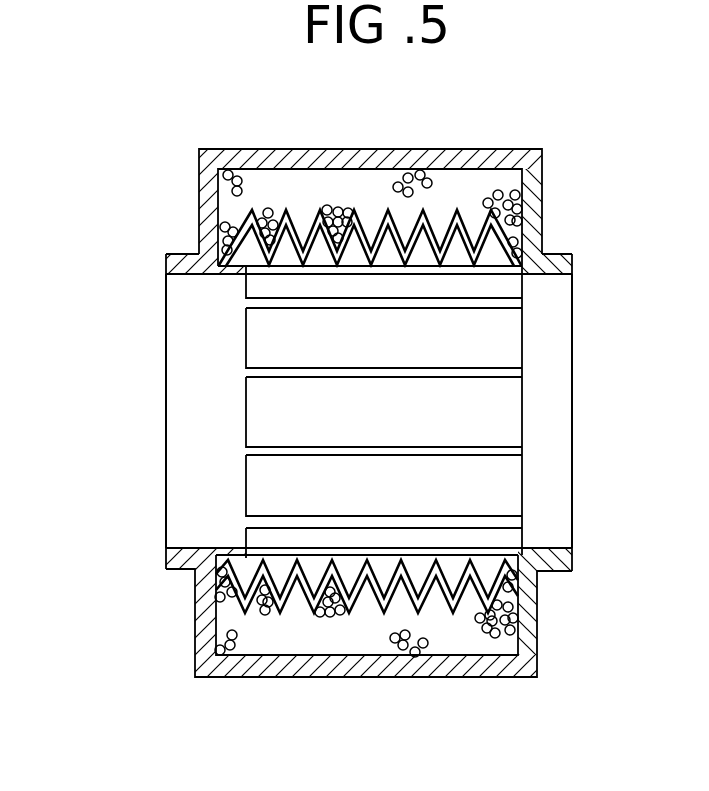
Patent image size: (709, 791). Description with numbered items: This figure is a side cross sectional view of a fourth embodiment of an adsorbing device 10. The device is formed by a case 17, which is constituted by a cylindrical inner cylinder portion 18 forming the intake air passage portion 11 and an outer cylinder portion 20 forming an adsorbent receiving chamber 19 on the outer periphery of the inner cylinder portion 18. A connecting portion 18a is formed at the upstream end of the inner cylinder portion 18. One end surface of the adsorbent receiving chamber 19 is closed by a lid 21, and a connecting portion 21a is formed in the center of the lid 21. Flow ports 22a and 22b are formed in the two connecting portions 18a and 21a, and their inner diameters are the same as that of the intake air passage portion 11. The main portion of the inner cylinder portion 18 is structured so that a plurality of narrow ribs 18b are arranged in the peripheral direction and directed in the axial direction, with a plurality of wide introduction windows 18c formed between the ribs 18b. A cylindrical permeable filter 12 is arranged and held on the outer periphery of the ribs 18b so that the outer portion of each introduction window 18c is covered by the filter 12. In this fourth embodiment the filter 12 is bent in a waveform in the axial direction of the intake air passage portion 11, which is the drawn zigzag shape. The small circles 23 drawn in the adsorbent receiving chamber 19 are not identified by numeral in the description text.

The adsorbing device 10 is at (195, 126).
The intake air passage portion 11 is at (252, 426).
The permeable filter 12 is at (436, 231).
The case 17 is at (401, 176).
The inner cylinder portion 18 is at (367, 408).
The connecting portion 18a is at (193, 257).
The ribs 18b is at (502, 372).
The introduction windows 18c is at (502, 492).
The adsorbent receiving chamber 19 is at (322, 182).
The outer cylinder portion 20 is at (473, 175).
The lid 21 is at (532, 199).
The connecting portion 21a is at (552, 270).
The flow port 22a is at (185, 323).
The flow port 22b is at (555, 517).
The balls 23 is at (233, 175).